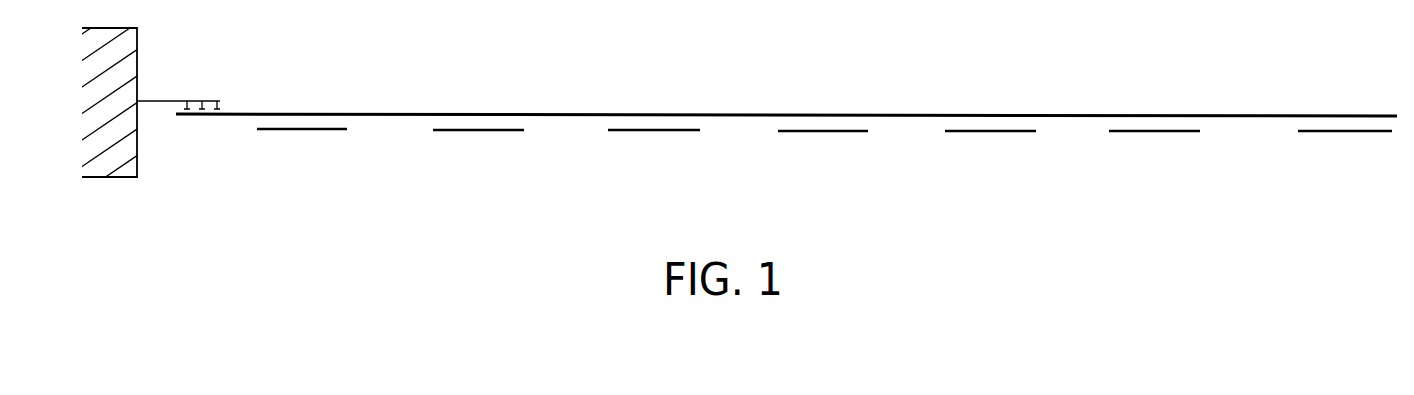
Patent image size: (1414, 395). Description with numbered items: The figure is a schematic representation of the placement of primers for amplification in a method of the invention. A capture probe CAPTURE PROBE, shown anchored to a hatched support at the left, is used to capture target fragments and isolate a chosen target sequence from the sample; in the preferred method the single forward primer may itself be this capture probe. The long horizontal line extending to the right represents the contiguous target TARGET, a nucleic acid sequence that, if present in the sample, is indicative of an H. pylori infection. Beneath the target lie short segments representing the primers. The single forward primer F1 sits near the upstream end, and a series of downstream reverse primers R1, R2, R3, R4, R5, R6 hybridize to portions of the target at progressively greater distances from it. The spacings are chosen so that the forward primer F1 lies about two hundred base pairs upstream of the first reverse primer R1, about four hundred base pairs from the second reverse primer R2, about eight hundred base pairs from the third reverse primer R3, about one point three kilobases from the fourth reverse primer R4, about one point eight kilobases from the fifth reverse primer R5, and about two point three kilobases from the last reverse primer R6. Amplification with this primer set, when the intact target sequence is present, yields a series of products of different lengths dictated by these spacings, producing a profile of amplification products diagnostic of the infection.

The capture probe CAPTURE PROBE is at (170, 101).
The target TARGET is at (1007, 90).
The forward primer F1 is at (302, 156).
The first reverse primer R1 is at (478, 156).
The second reverse primer R2 is at (654, 156).
The third reverse primer R3 is at (823, 157).
The fourth reverse primer R4 is at (990, 157).
The fifth reverse primer R5 is at (1154, 157).
The sixth reverse primer R6 is at (1345, 157).